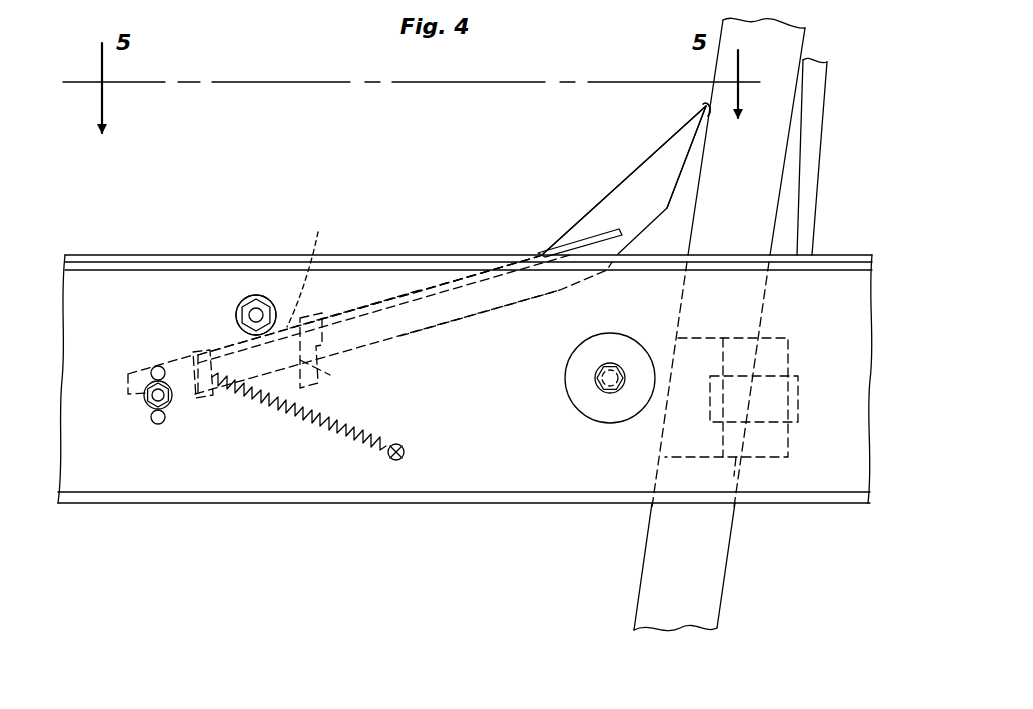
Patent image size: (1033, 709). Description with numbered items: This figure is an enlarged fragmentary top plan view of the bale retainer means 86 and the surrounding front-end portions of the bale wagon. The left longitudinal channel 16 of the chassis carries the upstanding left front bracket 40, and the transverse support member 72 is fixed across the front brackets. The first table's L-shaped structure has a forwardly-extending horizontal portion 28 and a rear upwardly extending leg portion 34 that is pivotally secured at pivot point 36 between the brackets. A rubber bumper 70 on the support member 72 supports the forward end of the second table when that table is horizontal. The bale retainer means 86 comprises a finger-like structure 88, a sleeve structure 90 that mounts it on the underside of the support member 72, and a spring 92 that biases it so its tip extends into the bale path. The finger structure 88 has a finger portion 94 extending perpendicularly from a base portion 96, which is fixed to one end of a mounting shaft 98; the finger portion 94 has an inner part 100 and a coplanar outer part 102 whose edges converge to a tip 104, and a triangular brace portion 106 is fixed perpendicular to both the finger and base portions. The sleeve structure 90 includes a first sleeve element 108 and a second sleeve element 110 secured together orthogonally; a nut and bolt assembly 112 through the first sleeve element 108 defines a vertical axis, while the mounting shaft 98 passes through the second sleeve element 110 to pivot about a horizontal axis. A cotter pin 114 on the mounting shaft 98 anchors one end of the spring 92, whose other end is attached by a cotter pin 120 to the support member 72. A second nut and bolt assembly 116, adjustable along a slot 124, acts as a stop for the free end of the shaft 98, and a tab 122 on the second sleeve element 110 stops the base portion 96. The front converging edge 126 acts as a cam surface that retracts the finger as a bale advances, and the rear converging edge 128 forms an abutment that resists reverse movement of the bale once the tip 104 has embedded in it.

The left longitudinally extending channel 16 is at (724, 567).
The forwardly-extending horizontal portion 28 is at (815, 148).
The rear upwardly extending leg portion 34 is at (790, 448).
The pivot point 36 is at (799, 400).
The left front bracket 40 is at (733, 470).
The rubber bumper 70 is at (578, 410).
The transverse support member 72 is at (128, 254).
The bale retainer means 86 is at (330, 206).
The finger-like structure 88 is at (412, 348).
The sleeve structure 90 is at (216, 340).
The spring 92 is at (322, 434).
The finger portion 94 is at (560, 246).
The base portion 96 is at (300, 322).
The mounting shaft 98 is at (130, 372).
The inner part 100 is at (486, 320).
The outer part 102 is at (628, 180).
The tip 104 is at (710, 110).
The brace portion 106 is at (428, 283).
The first sleeve element 108 is at (246, 298).
The second sleeve element 110 is at (307, 267).
The nut and bolt assembly 112 is at (264, 295).
The cotter pin 114 is at (192, 396).
The second nut and bolt assembly 116 is at (150, 412).
The cotter pin 120 is at (405, 455).
The tab 122 is at (334, 378).
The slot 124 is at (156, 425).
The front converging edge 126 is at (676, 132).
The rear converging edge 128 is at (682, 176).